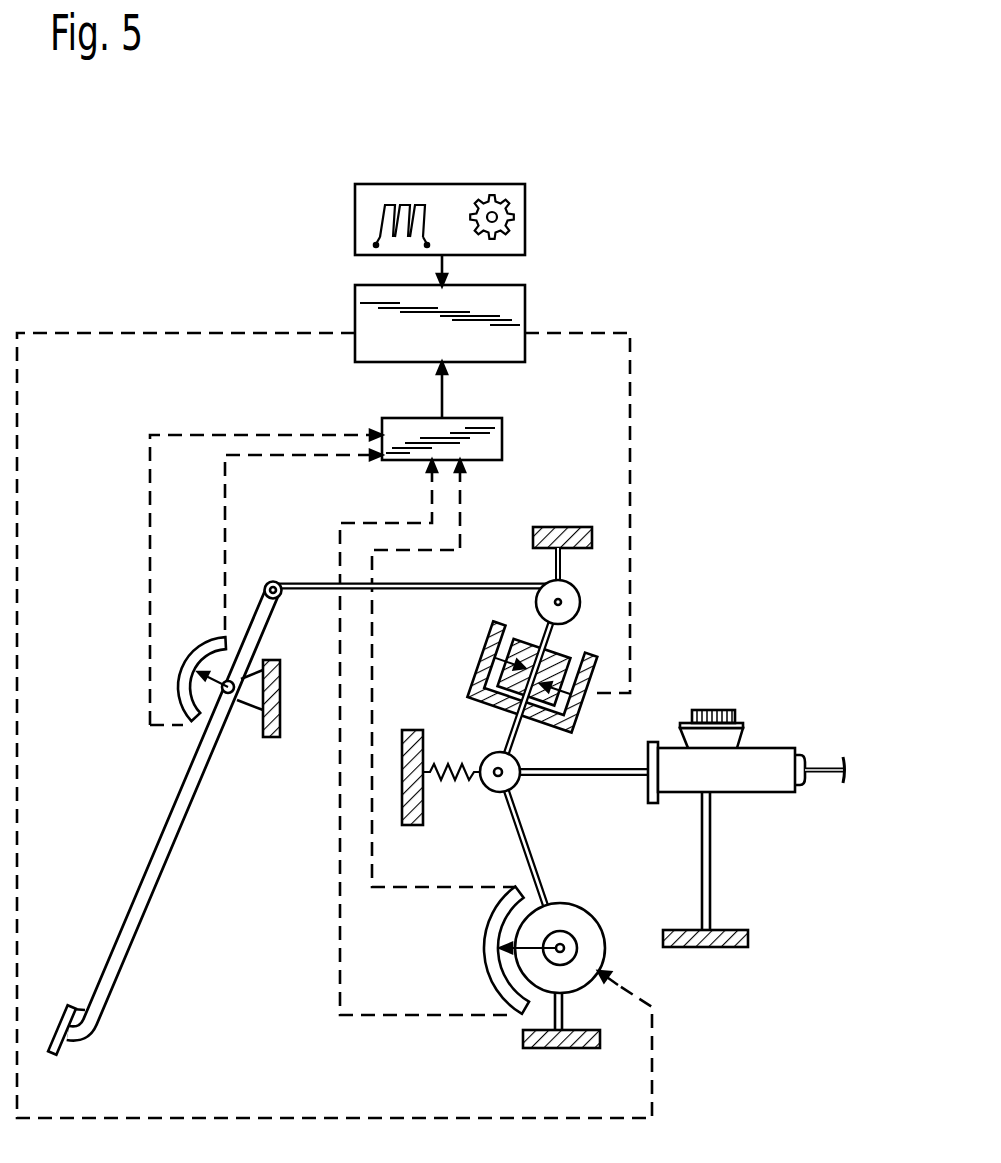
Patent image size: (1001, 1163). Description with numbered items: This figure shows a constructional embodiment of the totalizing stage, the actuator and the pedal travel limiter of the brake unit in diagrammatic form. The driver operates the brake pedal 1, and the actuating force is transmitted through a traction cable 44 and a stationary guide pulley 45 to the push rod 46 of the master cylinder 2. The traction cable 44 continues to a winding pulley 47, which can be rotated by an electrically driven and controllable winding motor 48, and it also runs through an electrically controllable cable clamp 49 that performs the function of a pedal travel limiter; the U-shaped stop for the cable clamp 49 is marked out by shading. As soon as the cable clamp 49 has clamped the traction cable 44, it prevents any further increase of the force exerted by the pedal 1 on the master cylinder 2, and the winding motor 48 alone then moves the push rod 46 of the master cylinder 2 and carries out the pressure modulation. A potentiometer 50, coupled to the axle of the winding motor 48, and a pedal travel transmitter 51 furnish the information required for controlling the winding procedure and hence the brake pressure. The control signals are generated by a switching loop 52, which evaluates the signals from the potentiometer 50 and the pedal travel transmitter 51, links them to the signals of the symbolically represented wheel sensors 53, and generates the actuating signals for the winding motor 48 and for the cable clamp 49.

The brake pedal 1 is at (142, 917).
The master cylinder 2 is at (768, 748).
The traction cable 44 is at (437, 592).
The guide pulley 45 is at (578, 617).
The push rod 46 is at (603, 767).
The winding pulley 47 is at (584, 928).
The winding motor 48 is at (594, 957).
The cable clamp 49 is at (468, 678).
The potentiometer 50 is at (482, 957).
The pedal travel transmitter 51 is at (190, 650).
The switching loop 52 is at (532, 292).
The wheel sensors 53 is at (532, 214).